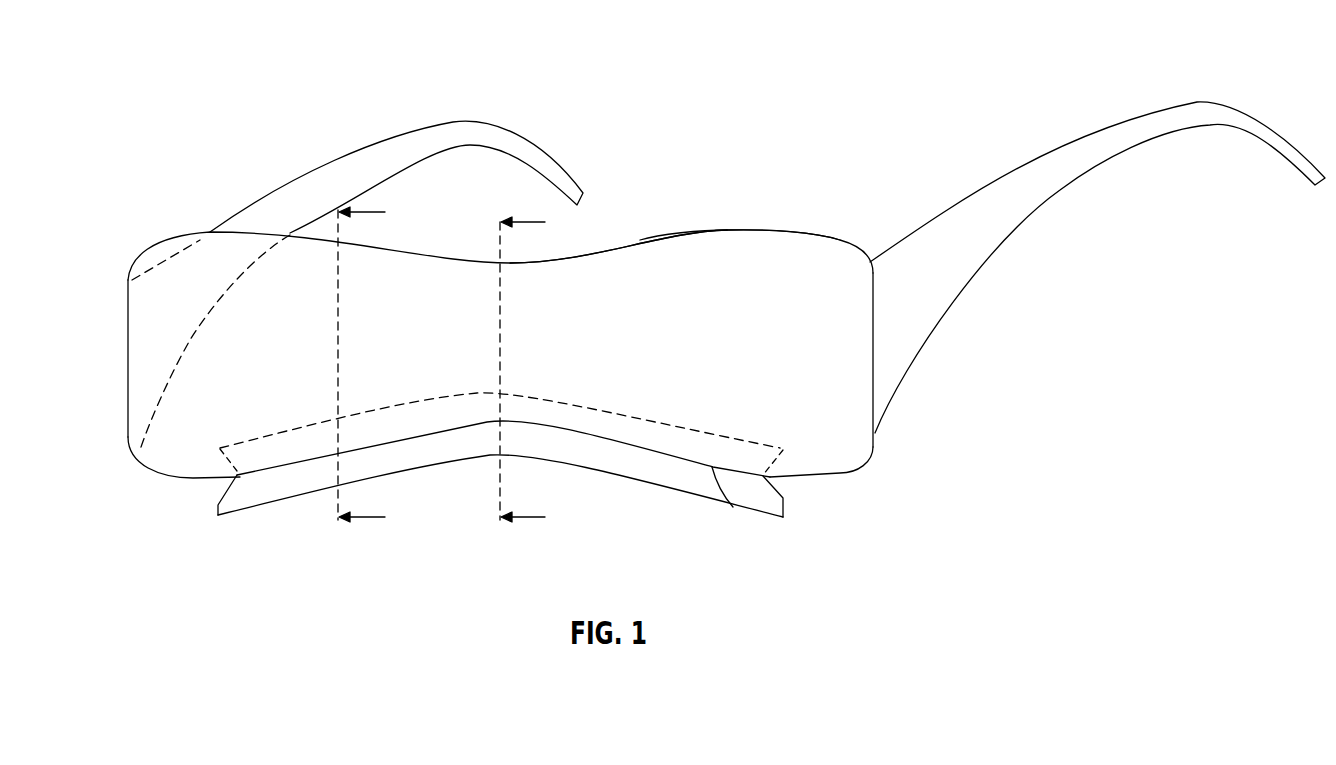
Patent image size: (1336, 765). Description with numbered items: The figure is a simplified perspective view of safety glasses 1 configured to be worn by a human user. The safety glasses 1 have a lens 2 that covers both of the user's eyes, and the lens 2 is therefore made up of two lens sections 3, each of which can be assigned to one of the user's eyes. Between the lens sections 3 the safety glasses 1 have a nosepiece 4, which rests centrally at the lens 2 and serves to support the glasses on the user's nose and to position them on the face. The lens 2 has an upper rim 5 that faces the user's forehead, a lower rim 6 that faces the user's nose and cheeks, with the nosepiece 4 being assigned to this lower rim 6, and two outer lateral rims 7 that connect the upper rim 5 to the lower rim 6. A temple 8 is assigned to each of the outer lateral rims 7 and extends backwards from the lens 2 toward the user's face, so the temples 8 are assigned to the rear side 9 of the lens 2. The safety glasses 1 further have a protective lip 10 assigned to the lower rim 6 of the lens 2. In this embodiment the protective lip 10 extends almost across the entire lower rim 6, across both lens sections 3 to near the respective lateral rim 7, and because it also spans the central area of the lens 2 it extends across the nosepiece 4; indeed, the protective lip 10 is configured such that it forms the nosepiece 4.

The safety glasses 1 is at (215, 143).
The lens 2 is at (600, 267).
The lens section 3 is at (186, 373).
The nosepiece 4 is at (599, 479).
The upper rim 5 is at (672, 235).
The lower rim 6 is at (733, 507).
The outer lateral rim 7 is at (128, 315).
The temple 8 is at (365, 162).
The rear side 9 is at (730, 232).
The protective lip 10 is at (243, 503).